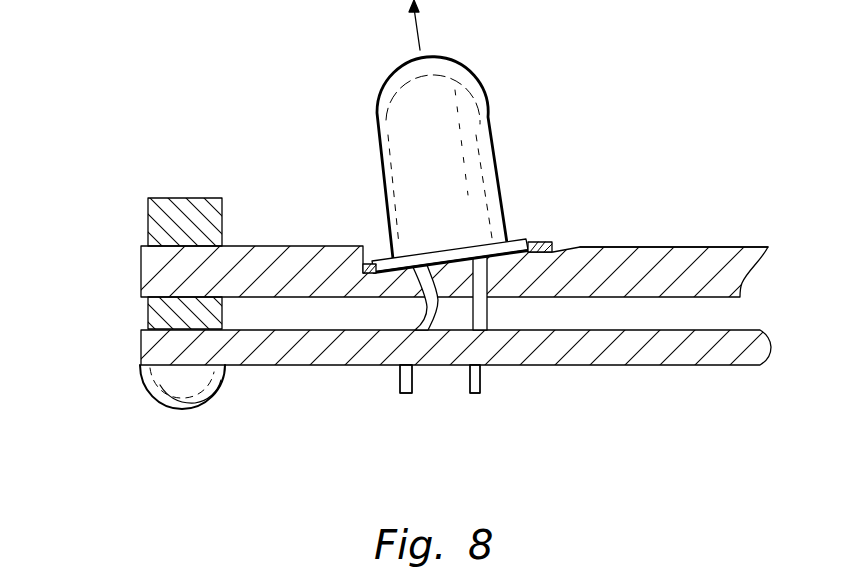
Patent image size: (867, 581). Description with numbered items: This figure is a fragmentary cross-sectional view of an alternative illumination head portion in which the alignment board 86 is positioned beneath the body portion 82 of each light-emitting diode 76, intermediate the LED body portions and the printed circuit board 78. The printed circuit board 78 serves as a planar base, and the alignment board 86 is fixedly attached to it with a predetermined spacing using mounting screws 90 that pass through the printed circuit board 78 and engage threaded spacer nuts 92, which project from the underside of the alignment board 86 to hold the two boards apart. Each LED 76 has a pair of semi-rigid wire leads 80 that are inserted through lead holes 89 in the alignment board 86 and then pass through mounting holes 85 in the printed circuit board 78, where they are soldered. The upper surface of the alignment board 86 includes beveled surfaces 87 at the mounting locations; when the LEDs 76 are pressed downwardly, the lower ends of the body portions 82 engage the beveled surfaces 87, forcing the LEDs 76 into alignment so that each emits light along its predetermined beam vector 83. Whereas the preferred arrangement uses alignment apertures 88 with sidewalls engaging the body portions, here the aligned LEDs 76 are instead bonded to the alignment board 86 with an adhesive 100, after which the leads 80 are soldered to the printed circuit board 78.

The light-emitting diode 76 is at (523, 237).
The printed circuit board 78 is at (141, 348).
The wire leads 80 is at (480, 395).
The body portion 82 is at (388, 78).
The beam vector 83 is at (420, 32).
The mounting hole 85 is at (400, 370).
The alignment board 86 is at (652, 258).
The beveled surfaces 87 is at (560, 246).
The alignment apertures 88 is at (435, 134).
The lead holes 89 is at (400, 288).
The mounting screws 90 is at (157, 403).
The spacer nuts 92 is at (148, 223).
The adhesive 100 is at (545, 240).